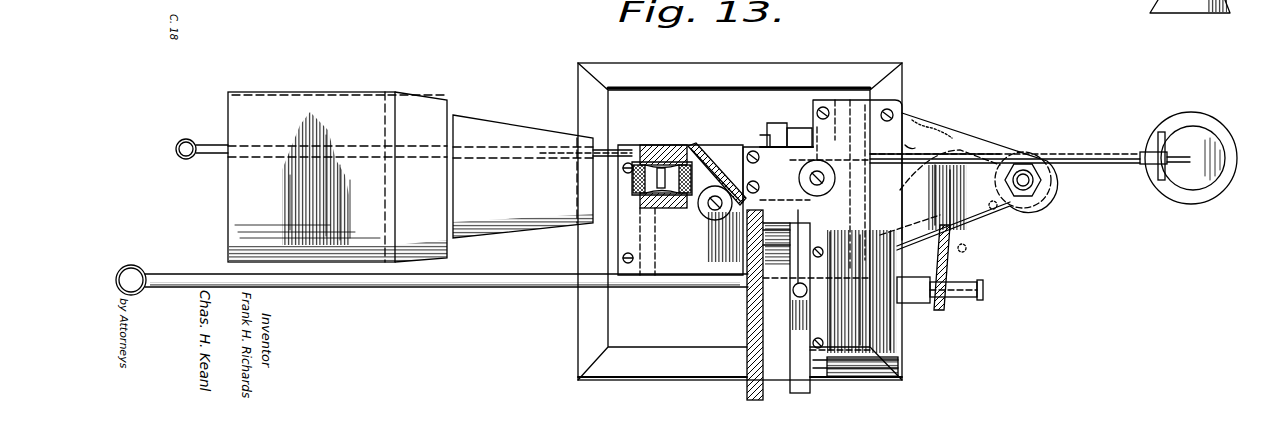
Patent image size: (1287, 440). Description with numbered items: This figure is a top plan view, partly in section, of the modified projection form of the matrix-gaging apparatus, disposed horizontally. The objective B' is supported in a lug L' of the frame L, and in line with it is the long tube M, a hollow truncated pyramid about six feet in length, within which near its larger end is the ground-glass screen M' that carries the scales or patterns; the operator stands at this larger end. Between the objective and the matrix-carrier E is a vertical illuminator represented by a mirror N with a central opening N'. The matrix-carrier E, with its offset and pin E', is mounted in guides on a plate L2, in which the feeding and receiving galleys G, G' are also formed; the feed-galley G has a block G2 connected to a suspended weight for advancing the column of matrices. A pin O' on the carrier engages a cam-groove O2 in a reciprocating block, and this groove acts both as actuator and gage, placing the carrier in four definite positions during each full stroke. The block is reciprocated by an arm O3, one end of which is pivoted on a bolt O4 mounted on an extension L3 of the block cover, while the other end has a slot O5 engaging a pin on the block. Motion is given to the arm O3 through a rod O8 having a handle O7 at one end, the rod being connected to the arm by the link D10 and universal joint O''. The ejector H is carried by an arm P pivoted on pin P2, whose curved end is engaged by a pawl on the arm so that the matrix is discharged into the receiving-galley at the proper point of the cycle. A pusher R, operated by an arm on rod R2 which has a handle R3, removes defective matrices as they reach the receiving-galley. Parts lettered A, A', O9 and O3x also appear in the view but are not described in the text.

The screen M' is at (337, 177).
The handle R3 is at (198, 138).
The handle O7 is at (144, 270).
The rod O8 is at (446, 267).
The tube M is at (523, 168).
The rod R2 is at (603, 153).
The plate A' is at (692, 210).
The lug L' is at (663, 160).
The objective B' is at (624, 184).
The mirror N is at (717, 155).
The frame L is at (717, 163).
The pusher R is at (722, 222).
The arm P is at (822, 130).
The ejector H is at (775, 118).
The matrix-carrier E is at (799, 126).
The central opening N' is at (766, 121).
The pin E' is at (779, 137).
The extension L3 is at (903, 113).
The pin O' is at (913, 136).
The pin P2 is at (835, 182).
The bolt O4 is at (1053, 176).
The ring handle O3x is at (1053, 154).
The slot O5 is at (867, 260).
The cam-groove O2 is at (865, 320).
The feeding galley G is at (776, 305).
The receiving galley G' is at (786, 301).
The block G2 is at (793, 308).
The plate A is at (744, 284).
The plate L2 is at (900, 368).
The bolt O9 is at (945, 308).
The link D10 is at (955, 272).
The pin O'' is at (981, 258).
The arm O3 is at (987, 222).